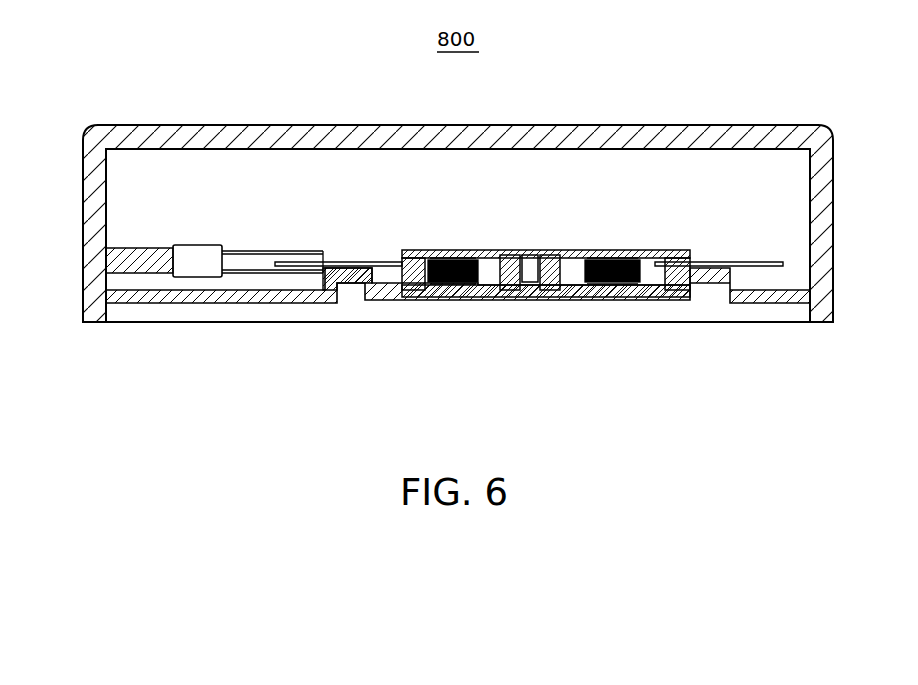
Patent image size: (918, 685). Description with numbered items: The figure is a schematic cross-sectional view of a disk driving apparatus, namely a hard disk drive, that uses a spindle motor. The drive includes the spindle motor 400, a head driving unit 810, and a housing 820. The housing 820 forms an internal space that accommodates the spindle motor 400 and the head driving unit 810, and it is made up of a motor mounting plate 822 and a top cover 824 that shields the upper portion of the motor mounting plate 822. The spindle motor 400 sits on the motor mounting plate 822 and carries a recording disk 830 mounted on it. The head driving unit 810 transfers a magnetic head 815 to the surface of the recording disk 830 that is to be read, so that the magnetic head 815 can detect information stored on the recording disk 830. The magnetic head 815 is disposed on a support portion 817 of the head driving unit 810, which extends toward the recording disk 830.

The housing 820 is at (81, 207).
The top cover 824 is at (270, 130).
The motor mounting plate 822 is at (820, 297).
The head driving unit 810 is at (195, 285).
The support portion 817 is at (276, 268).
The magnetic head 815 is at (325, 284).
The recording disk 830 is at (730, 262).
The spindle motor 400 is at (549, 246).